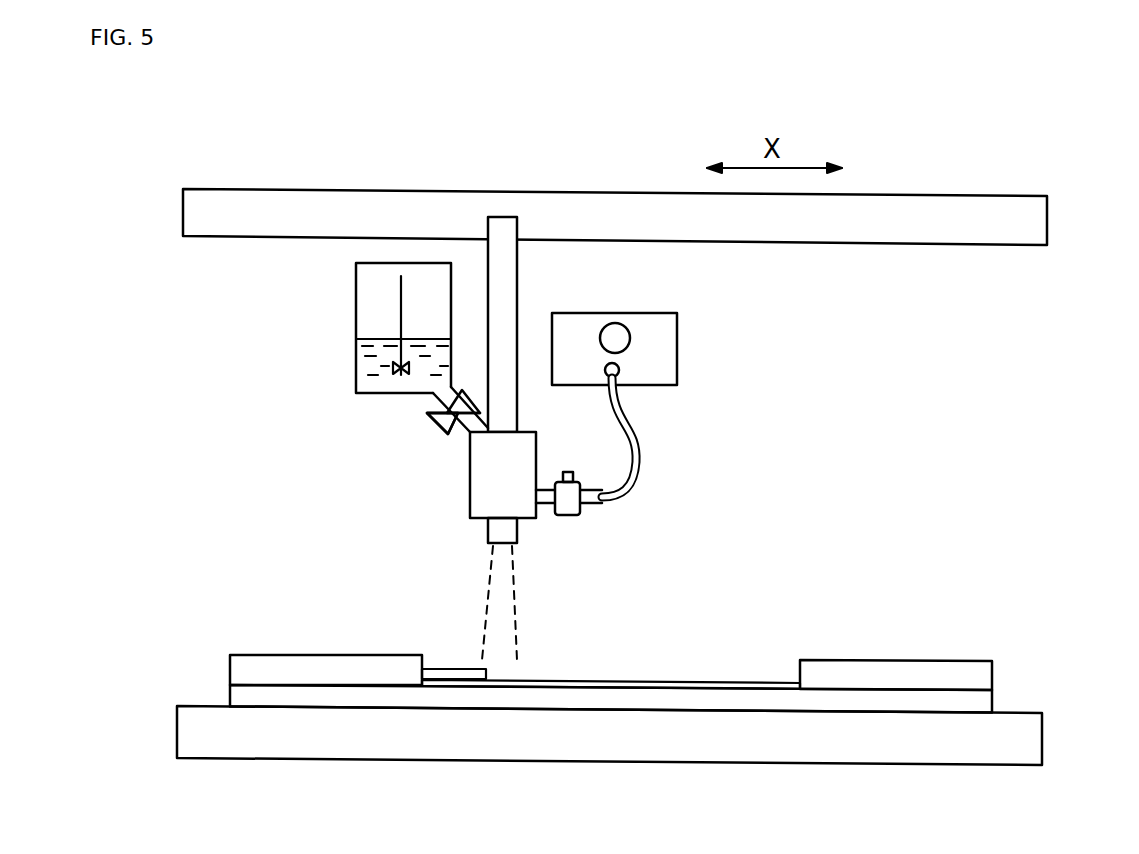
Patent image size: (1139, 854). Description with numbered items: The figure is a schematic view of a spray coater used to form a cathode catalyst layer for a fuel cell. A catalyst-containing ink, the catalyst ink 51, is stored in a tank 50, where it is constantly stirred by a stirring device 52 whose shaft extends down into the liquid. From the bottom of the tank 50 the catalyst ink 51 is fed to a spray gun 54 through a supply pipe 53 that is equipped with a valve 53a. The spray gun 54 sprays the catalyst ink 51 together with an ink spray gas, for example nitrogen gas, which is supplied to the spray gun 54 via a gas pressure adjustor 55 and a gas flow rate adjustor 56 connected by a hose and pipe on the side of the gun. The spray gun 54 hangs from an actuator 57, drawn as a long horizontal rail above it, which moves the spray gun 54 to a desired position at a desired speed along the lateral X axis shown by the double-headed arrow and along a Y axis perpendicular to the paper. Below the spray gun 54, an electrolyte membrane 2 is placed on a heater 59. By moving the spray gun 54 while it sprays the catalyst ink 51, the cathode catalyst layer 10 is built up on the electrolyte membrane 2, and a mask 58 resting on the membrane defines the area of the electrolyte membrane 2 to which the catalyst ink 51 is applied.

The actuator 57 is at (303, 203).
The tank 50 is at (356, 320).
The catalyst ink 51 is at (367, 368).
The stirring device 52 is at (398, 293).
The supply pipe 53 is at (440, 398).
The valve 53a is at (456, 430).
The spray gun 54 is at (480, 486).
The gas pressure adjustor 55 is at (657, 326).
The gas flow rate adjustor 56 is at (573, 515).
The heater 59 is at (1022, 744).
The electrolyte membrane 2 is at (978, 702).
The cathode catalyst layer 10 is at (750, 679).
The mask 58 is at (884, 672).